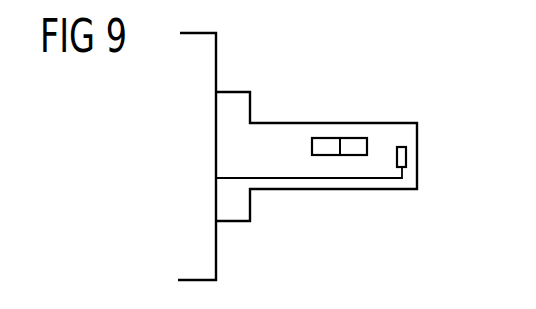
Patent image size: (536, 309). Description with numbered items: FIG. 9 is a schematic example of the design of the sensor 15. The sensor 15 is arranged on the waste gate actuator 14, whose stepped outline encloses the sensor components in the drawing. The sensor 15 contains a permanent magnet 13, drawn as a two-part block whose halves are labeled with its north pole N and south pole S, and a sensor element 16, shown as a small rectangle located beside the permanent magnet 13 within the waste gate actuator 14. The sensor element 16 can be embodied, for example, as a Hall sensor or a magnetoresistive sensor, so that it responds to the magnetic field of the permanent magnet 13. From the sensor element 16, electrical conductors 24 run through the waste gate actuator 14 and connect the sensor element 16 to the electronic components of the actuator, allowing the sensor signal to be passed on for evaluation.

The waste gate actuator 14 is at (199, 54).
The electrical conductors 24 is at (323, 179).
The sensor element 16 is at (406, 153).
The permanent magnet 13 is at (368, 148).
The sensor 15 is at (341, 88).